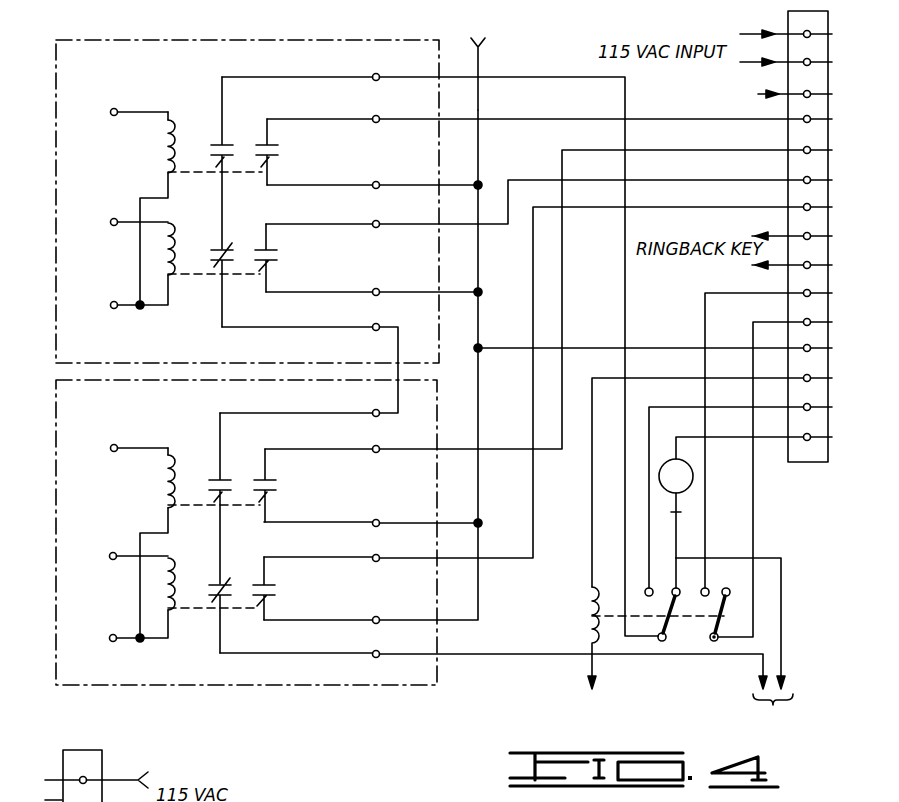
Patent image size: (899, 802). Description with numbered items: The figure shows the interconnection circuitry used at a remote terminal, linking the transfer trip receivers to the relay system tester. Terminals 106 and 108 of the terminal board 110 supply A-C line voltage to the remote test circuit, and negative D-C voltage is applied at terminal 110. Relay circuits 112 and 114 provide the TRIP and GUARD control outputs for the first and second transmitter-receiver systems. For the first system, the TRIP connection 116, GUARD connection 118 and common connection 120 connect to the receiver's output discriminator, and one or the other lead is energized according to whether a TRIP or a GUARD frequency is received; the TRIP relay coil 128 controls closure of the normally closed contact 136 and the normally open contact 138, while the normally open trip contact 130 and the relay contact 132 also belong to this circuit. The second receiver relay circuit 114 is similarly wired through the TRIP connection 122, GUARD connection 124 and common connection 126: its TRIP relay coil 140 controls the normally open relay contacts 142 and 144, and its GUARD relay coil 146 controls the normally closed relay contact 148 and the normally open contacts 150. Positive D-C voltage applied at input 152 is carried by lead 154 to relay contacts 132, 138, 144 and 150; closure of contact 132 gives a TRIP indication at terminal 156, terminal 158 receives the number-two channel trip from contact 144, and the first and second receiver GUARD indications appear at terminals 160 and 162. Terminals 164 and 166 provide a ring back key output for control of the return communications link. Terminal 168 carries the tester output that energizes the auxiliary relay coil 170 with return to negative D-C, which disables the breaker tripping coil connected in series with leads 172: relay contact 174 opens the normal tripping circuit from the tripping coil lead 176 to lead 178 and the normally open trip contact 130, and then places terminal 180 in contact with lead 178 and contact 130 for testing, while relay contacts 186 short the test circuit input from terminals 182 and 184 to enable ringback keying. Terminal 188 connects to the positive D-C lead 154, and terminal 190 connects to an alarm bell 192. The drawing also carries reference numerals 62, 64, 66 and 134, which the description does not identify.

The power supply unit 62 is at (96, 750).
The power input terminal 64 is at (83, 780).
The power input terminal 66 is at (40, 795).
The terminal 106 is at (804, 36).
The terminal 108 is at (804, 64).
The terminal board 110 is at (818, 14).
The relay circuit 112 is at (55, 189).
The relay circuit 114 is at (55, 523).
The TRIP connection 116 is at (115, 110).
The GUARD connection 118 is at (115, 220).
The common connection 120 is at (115, 303).
The TRIP connection 122 is at (115, 446).
The GUARD connection 124 is at (114, 554).
The common connection 126 is at (114, 636).
The TRIP relay coil 128 is at (174, 148).
The normally open trip contact 130 is at (221, 142).
The relay contact 132 is at (267, 141).
The guard relay coil 134 is at (174, 250).
The normally closed contact 136 is at (222, 247).
The normally open contact 138 is at (267, 247).
The TRIP relay coil 140 is at (174, 484).
The normally open relay contact 142 is at (219, 477).
The normally open relay contact 144 is at (265, 477).
The GUARD relay coil 146 is at (174, 590).
The normally closed relay contact 148 is at (220, 582).
The normally open contacts 150 is at (265, 582).
The input 152 is at (483, 51).
The lead 154 is at (404, 184).
The terminal 156 is at (624, 122).
The terminal 158 is at (624, 295).
The terminal 160 is at (624, 198).
The terminal 162 is at (624, 378).
The terminal 164 is at (810, 238).
The terminal 166 is at (810, 267).
The terminal 168 is at (730, 478).
The auxiliary relay coil 170 is at (590, 605).
The leads 172 is at (588, 692).
The relay contact 174 is at (668, 640).
The tripping coil lead 176 is at (784, 609).
The lead 178 is at (387, 82).
The terminal 180 is at (758, 493).
The terminal 182 is at (786, 436).
The terminal 184 is at (793, 475).
The relay contacts 186 is at (718, 641).
The terminal 188 is at (673, 350).
The terminal 190 is at (772, 444).
The alarm bell 192 is at (668, 500).